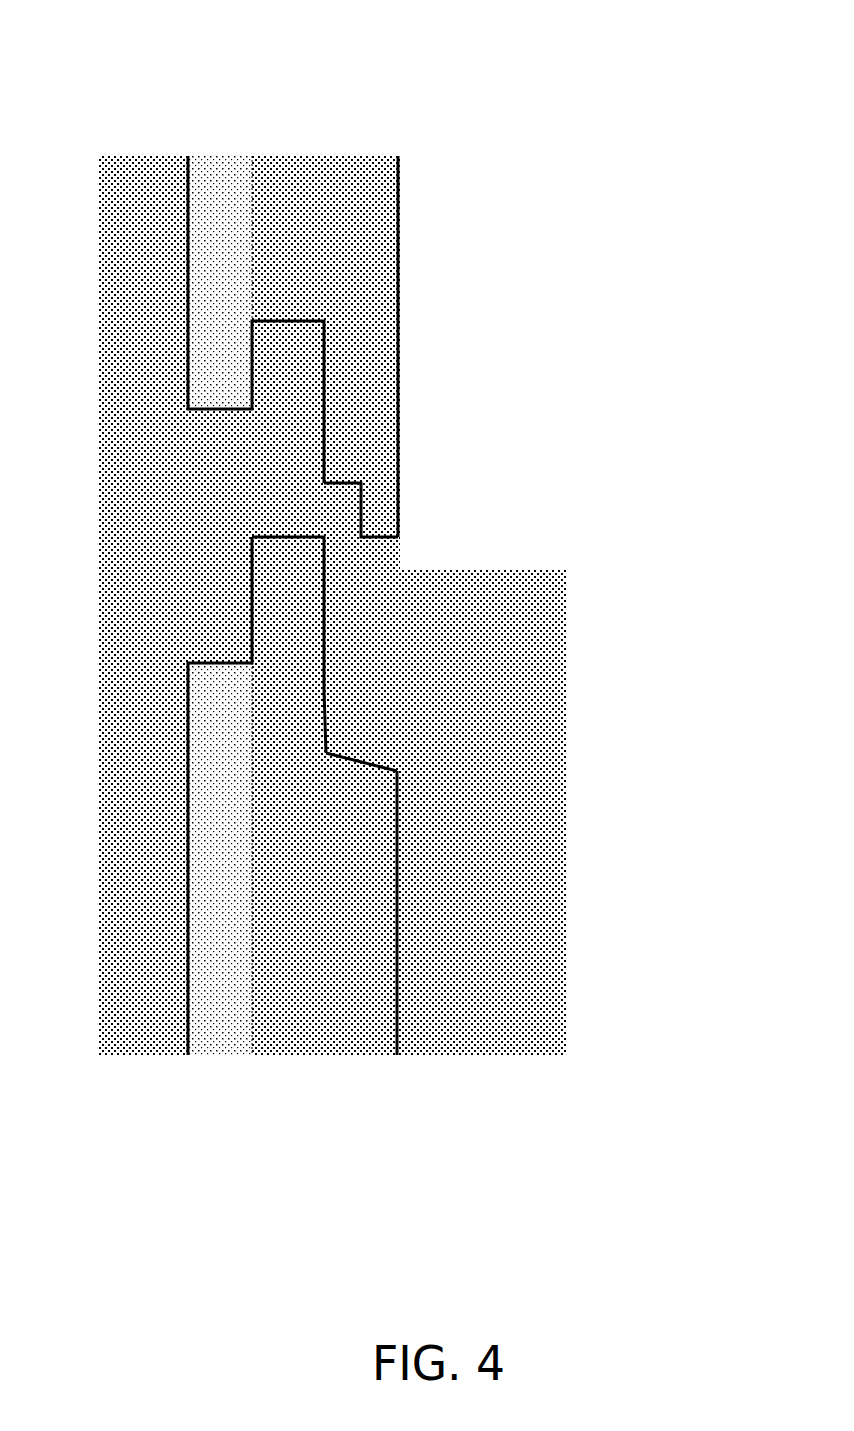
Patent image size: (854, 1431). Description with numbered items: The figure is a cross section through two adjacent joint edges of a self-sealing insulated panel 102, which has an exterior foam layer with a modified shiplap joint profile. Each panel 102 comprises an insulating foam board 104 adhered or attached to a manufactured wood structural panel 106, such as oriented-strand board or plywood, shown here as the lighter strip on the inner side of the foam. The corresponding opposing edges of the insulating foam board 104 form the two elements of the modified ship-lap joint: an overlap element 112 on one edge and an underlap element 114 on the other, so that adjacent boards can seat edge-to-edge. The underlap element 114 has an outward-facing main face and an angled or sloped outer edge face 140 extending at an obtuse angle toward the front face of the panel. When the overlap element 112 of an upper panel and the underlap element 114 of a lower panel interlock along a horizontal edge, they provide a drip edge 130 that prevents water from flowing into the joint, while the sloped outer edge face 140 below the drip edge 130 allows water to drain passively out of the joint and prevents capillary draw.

The self-sealing insulated panel 102 is at (418, 109).
The insulating foam board 104 is at (350, 242).
The manufactured wood structural panel 106 is at (202, 197).
The overlap element 112 is at (461, 416).
The underlap element 114 is at (448, 829).
The drip edge 130 is at (406, 556).
The angled outer edge face 140 is at (380, 750).